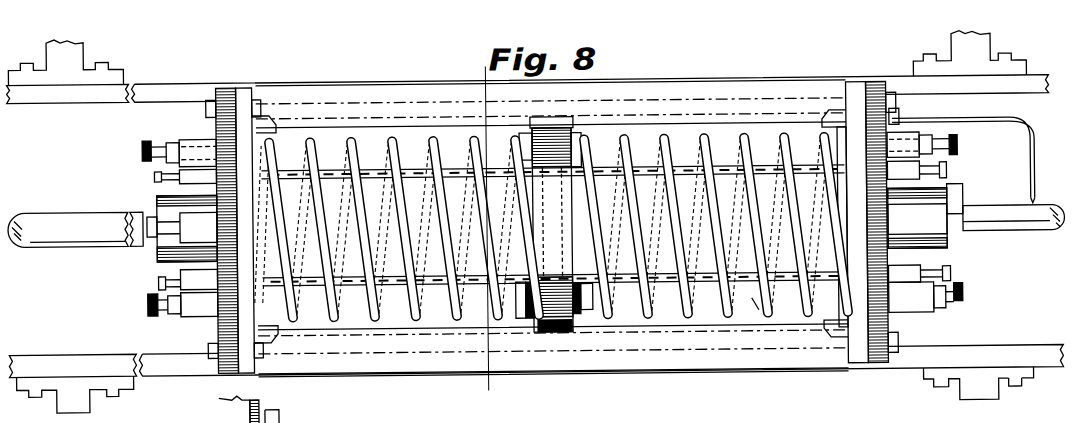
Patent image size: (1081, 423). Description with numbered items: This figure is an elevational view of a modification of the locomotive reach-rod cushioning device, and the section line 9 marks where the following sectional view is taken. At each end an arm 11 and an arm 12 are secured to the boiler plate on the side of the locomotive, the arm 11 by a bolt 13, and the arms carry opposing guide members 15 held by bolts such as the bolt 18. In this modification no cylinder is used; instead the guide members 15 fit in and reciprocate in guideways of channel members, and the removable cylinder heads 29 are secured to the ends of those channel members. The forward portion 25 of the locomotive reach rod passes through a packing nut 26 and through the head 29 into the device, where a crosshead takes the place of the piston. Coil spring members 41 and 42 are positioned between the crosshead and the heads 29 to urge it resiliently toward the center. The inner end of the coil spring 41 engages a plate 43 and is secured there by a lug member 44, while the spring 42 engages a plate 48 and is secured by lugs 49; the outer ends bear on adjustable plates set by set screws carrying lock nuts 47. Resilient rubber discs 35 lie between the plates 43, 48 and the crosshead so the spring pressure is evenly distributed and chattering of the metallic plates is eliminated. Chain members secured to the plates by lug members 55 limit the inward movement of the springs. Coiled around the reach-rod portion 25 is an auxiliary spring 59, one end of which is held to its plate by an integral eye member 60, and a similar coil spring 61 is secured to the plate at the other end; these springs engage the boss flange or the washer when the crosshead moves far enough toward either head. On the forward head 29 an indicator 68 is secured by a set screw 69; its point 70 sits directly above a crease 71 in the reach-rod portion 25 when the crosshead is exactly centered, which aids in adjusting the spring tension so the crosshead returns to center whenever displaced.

The section line 9 is at (485, 70).
The arm 11 is at (983, 52).
The arm 12 is at (978, 400).
The bolt 13 is at (268, 410).
The guide member 15 is at (178, 88).
The bolt 18 is at (1013, 388).
The forward portion of locomotive reach rod 25 is at (1047, 215).
The packing nut 26 is at (965, 199).
The removable cylinder head 29 is at (890, 332).
The disc of rubber 35 is at (533, 127).
The coil spring member 41 is at (703, 135).
The coil spring member 42 is at (395, 135).
The plate 43 is at (582, 300).
The lug member 44 is at (592, 292).
The lock nut 47 is at (930, 311).
The plate 48 is at (530, 315).
The lug 49 is at (522, 300).
The lug member 55 is at (753, 312).
The auxiliary spring 59 is at (788, 283).
The eye member 60 is at (834, 283).
The coil spring 61 is at (329, 168).
The indicator 68 is at (990, 124).
The set screw 69 is at (900, 119).
The point 70 is at (1037, 202).
The crease 71 is at (1027, 237).